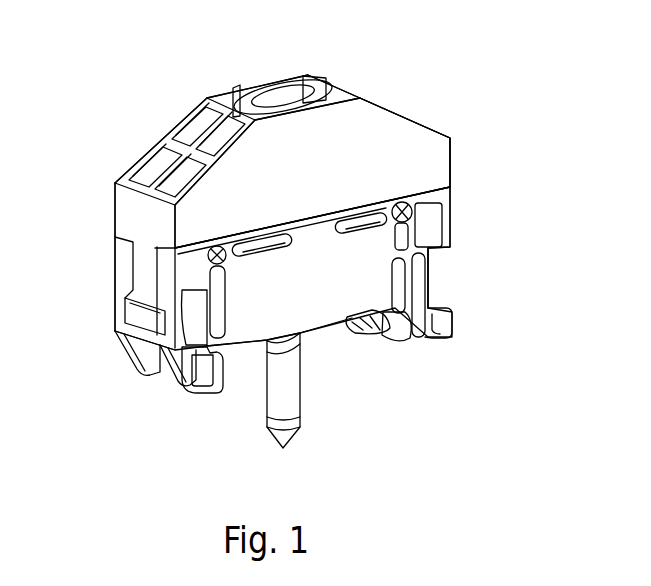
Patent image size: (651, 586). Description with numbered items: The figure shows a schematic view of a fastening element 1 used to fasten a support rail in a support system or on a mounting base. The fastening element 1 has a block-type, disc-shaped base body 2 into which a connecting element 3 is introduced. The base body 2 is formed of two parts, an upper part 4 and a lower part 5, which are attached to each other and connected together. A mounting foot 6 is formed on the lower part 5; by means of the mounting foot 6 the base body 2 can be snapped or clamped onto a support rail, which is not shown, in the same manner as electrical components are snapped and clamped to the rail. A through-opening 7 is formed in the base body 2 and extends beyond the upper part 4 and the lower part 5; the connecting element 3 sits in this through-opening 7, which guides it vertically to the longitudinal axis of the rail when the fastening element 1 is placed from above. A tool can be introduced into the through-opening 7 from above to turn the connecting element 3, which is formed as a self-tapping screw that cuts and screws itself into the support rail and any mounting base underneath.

The fastening element 1 is at (122, 139).
The base body 2 is at (282, 230).
The connecting element 3 is at (277, 383).
The upper part 4 is at (305, 184).
The lower part 5 is at (304, 294).
The mounting foot 6 is at (193, 382).
The through-opening 7 is at (277, 95).